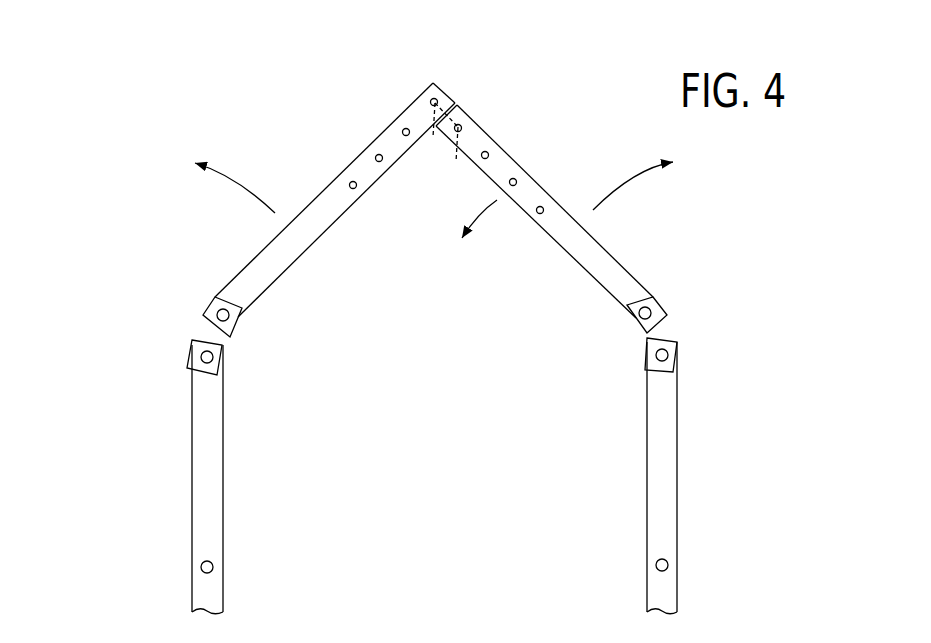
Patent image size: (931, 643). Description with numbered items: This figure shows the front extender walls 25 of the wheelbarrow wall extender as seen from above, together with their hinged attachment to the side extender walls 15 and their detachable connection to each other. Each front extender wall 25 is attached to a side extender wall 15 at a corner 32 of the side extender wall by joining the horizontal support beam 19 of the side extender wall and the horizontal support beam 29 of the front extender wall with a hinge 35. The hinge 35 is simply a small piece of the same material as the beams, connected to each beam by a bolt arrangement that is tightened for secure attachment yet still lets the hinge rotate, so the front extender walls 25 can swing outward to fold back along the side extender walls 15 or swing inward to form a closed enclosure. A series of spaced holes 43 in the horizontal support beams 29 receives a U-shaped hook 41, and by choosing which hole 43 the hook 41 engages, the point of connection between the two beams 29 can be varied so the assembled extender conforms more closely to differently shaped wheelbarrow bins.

The side extender wall 15 is at (224, 488).
The horizontal support beam of the side extender wall 19 is at (190, 518).
The front extender wall 25 is at (375, 128).
The horizontal support beam of the front extender wall 29 is at (350, 161).
The corner 32 is at (177, 345).
The hinge 35 is at (197, 327).
The U-shaped hook 41 is at (433, 142).
The hole 43 is at (432, 108).